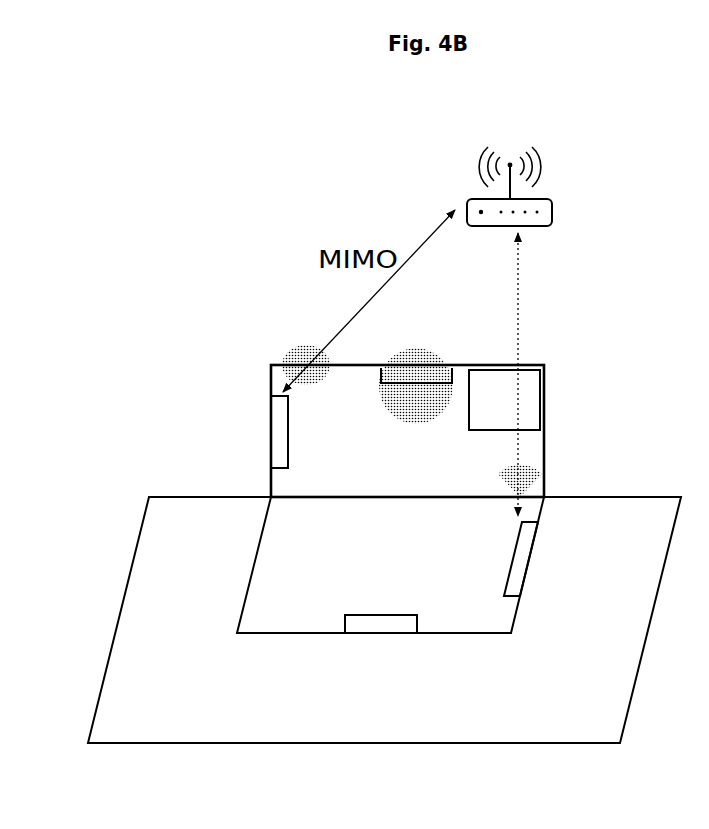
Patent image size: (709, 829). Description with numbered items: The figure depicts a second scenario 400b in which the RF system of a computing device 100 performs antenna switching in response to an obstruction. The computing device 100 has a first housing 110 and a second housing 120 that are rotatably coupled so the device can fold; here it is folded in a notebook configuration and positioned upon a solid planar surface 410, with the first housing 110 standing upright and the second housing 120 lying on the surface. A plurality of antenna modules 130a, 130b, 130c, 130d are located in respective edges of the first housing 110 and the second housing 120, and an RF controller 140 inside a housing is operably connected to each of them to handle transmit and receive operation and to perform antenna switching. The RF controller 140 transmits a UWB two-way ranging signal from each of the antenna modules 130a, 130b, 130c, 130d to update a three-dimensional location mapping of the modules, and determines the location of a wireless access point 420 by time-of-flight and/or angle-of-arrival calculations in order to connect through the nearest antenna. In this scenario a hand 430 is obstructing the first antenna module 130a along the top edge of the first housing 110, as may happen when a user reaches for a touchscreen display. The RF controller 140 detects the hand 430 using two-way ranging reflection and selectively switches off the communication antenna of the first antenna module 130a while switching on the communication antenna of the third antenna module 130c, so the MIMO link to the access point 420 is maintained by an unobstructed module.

The second scenario 400b is at (607, 117).
The wireless access point 420 is at (548, 226).
The computing device 100 is at (456, 474).
The first housing 110 is at (407, 431).
The second housing 120 is at (390, 565).
The solid planar surface 410 is at (384, 620).
The RF controller 140 is at (504, 400).
The hand 430 is at (412, 421).
The first antenna module 130a is at (451, 366).
The second antenna module 130b is at (271, 447).
The third antenna module 130c is at (345, 620).
The fourth antenna module 130d is at (526, 562).